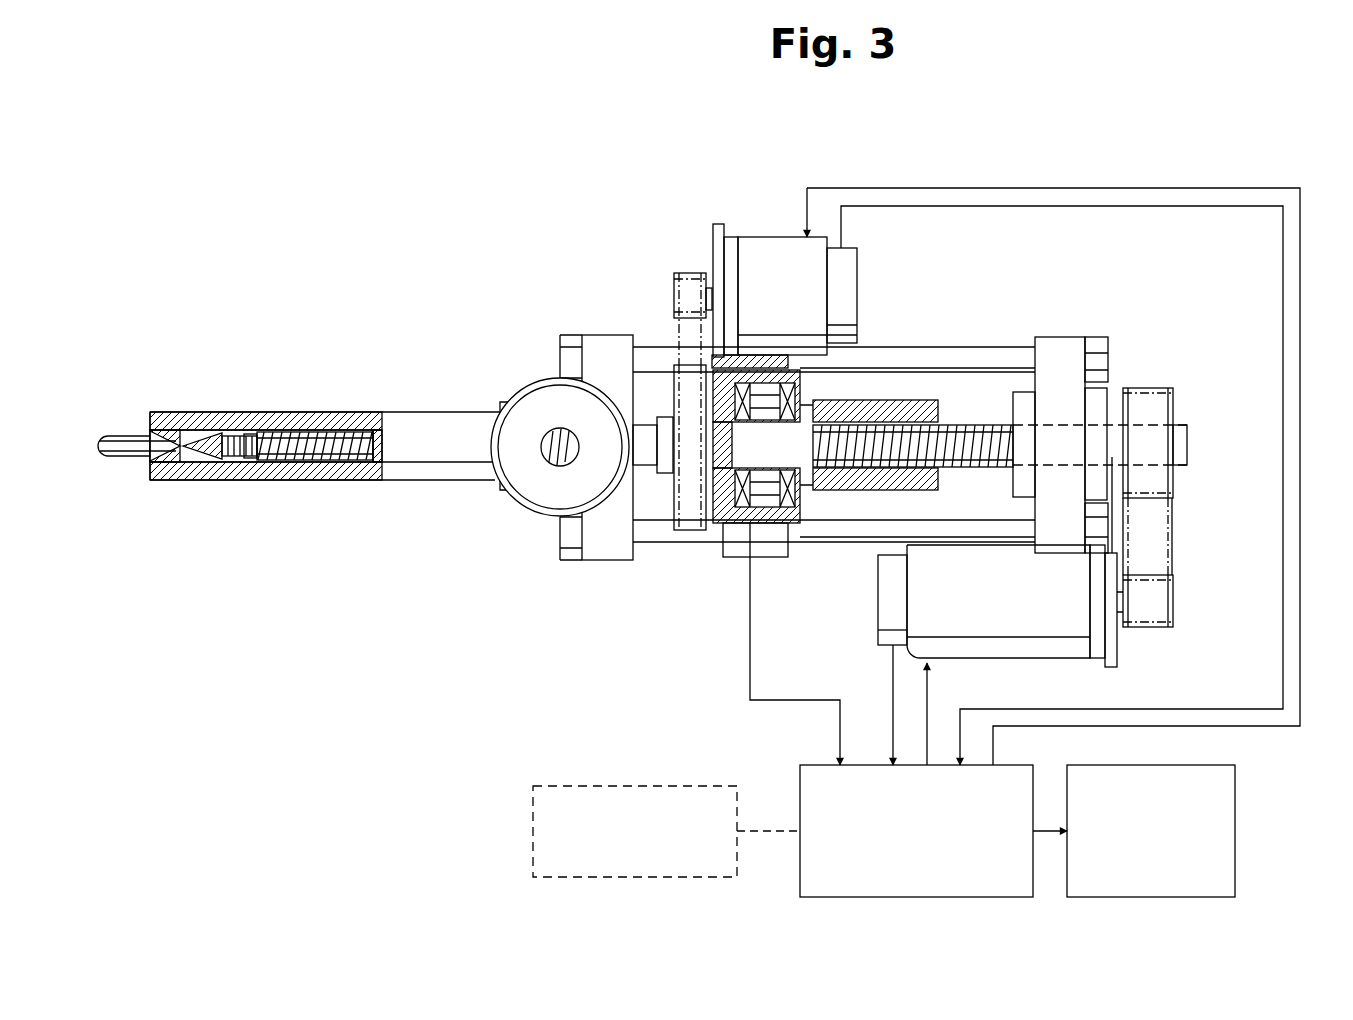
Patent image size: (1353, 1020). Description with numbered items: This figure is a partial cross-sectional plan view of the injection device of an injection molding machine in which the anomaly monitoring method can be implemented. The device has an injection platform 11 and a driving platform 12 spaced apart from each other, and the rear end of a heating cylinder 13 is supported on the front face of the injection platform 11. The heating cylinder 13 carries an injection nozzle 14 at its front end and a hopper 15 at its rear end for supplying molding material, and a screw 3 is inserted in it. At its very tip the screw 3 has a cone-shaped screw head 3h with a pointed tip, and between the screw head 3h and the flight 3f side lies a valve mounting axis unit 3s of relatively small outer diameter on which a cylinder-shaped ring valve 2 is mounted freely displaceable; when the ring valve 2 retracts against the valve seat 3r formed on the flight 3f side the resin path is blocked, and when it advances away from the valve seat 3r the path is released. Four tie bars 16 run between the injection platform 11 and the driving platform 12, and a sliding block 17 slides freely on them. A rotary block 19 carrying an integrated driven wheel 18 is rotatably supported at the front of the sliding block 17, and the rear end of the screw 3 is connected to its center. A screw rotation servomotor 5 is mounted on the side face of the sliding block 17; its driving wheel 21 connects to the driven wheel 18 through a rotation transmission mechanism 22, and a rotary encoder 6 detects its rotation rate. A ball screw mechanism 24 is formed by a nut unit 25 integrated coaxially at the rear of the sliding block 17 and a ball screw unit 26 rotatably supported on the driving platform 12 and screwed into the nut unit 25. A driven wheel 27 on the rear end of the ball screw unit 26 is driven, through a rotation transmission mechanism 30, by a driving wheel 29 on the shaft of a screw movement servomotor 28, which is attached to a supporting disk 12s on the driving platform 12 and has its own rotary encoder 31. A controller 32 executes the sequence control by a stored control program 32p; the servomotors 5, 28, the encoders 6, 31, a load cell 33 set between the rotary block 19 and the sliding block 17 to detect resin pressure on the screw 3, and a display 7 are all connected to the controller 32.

The ring valve 2 is at (248, 428).
The screw 3 is at (318, 418).
The valve seat 3r is at (243, 415).
The flight 3f is at (373, 413).
The screw head 3h is at (203, 462).
The valve mounting axis unit 3s is at (240, 462).
The screw rotation servomotor 5 is at (758, 237).
The rotary encoder 6 is at (855, 268).
The display 7 is at (1236, 832).
The injection platform 11 is at (588, 334).
The driving platform 12 is at (1088, 360).
The supporting disk 12s is at (1118, 662).
The heating cylinder 13 is at (300, 482).
The injection nozzle 14 is at (115, 433).
The hopper 15 is at (533, 382).
The tie bars 16 is at (1018, 345).
The sliding block 17 is at (838, 528).
The driven wheel 18 is at (680, 490).
The rotary block 19 is at (812, 403).
The driving wheel 21 is at (676, 290).
The rotation transmission mechanism 22 is at (665, 323).
The ball screw mechanism 24 is at (906, 392).
The nut unit 25 is at (926, 400).
The ball screw unit 26 is at (988, 425).
The driven wheel 27 is at (1175, 412).
The screw movement servomotor 28 is at (968, 660).
The driving wheel 29 is at (1175, 603).
The rotation transmission mechanism 30 is at (1180, 528).
The rotary encoder 31 is at (878, 630).
The controller 32 is at (800, 782).
The control program 32p is at (645, 786).
The load cell 33 is at (782, 540).